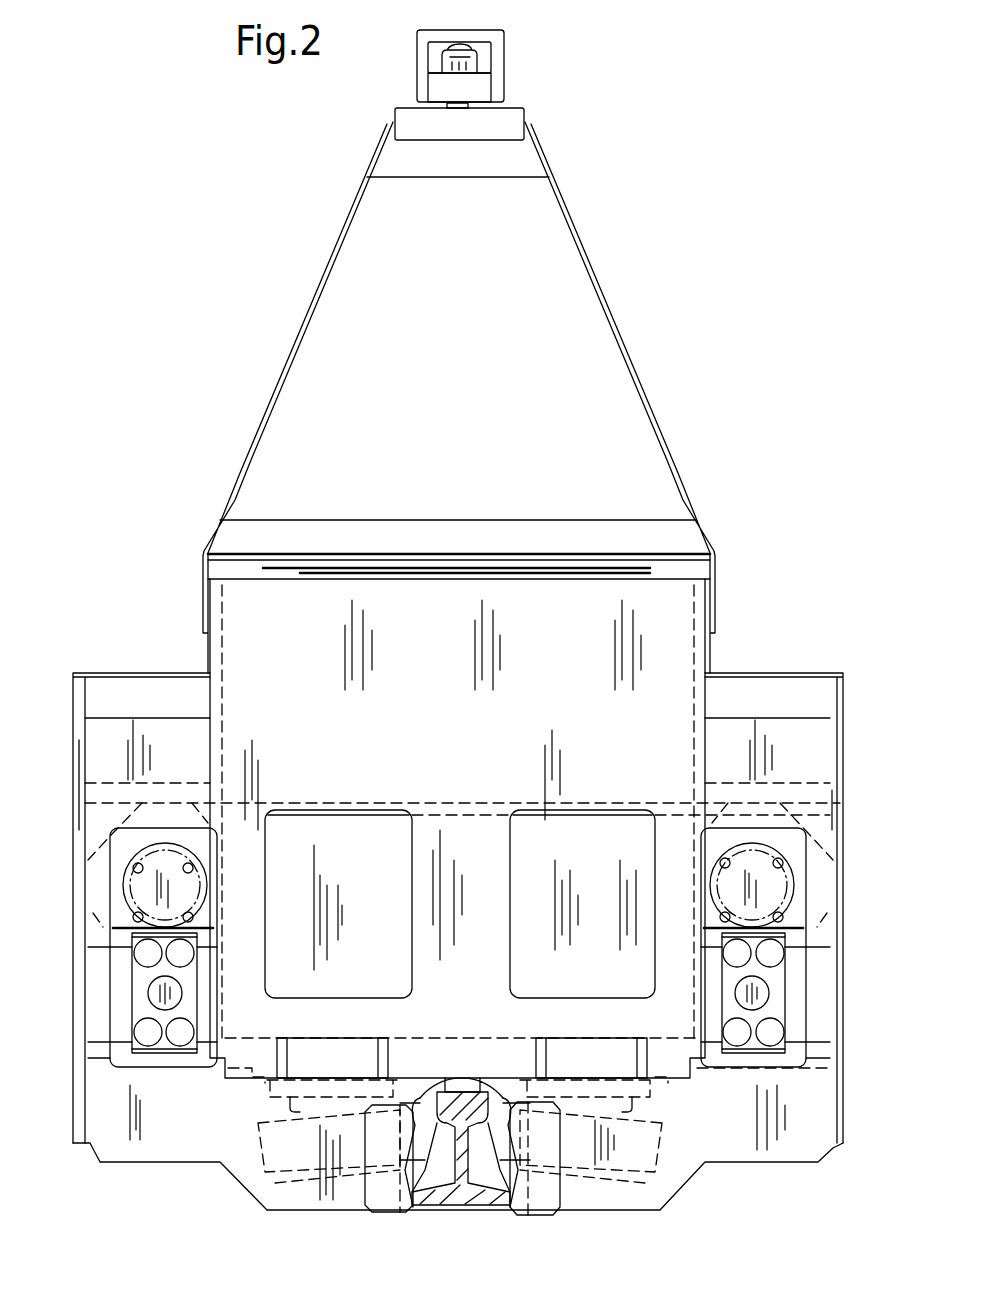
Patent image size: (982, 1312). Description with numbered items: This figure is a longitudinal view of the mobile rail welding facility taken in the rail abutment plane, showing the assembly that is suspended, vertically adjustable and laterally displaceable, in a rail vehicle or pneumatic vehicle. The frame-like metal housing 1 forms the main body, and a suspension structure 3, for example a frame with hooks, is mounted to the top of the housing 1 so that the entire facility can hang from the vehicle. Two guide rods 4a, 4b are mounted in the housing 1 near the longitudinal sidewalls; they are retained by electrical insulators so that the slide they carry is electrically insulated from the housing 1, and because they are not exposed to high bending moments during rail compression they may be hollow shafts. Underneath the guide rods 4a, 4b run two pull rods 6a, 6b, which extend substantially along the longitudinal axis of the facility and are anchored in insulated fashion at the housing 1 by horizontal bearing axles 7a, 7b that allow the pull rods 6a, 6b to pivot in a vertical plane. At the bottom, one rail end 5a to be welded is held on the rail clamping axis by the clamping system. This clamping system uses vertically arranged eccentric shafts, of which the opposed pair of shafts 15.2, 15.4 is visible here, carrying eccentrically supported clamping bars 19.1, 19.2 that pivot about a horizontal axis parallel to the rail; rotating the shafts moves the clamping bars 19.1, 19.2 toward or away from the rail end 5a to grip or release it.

The housing 1 is at (813, 665).
The suspension structure 3 is at (670, 430).
The guide rod 4a is at (772, 885).
The guide rod 4b is at (143, 882).
The rail end 5a is at (480, 1193).
The pull rod 6a is at (147, 993).
The pull rod 6b is at (758, 993).
The bearing axle 7a is at (122, 972).
The bearing axle 7b is at (795, 967).
The eccentric shaft 15.2 is at (286, 1107).
The eccentric shaft 15.4 is at (636, 1108).
The clamping bar 19.1 is at (254, 1174).
The clamping bar 19.2 is at (670, 1165).